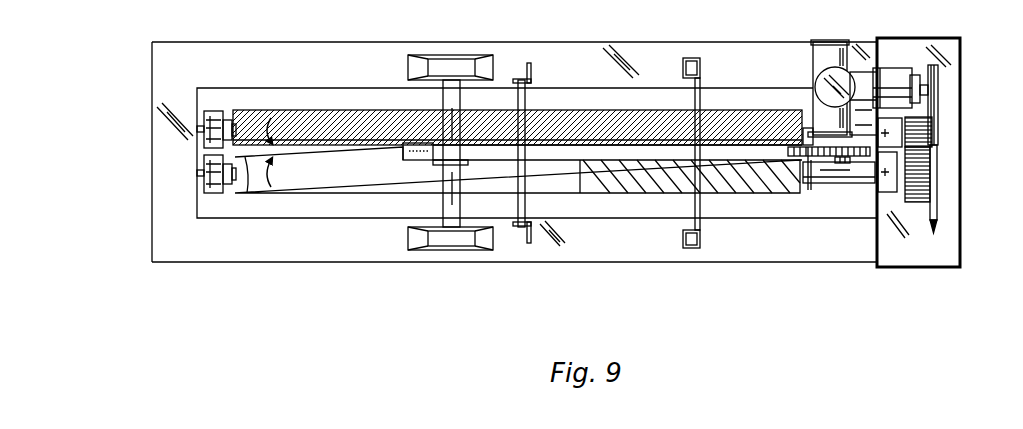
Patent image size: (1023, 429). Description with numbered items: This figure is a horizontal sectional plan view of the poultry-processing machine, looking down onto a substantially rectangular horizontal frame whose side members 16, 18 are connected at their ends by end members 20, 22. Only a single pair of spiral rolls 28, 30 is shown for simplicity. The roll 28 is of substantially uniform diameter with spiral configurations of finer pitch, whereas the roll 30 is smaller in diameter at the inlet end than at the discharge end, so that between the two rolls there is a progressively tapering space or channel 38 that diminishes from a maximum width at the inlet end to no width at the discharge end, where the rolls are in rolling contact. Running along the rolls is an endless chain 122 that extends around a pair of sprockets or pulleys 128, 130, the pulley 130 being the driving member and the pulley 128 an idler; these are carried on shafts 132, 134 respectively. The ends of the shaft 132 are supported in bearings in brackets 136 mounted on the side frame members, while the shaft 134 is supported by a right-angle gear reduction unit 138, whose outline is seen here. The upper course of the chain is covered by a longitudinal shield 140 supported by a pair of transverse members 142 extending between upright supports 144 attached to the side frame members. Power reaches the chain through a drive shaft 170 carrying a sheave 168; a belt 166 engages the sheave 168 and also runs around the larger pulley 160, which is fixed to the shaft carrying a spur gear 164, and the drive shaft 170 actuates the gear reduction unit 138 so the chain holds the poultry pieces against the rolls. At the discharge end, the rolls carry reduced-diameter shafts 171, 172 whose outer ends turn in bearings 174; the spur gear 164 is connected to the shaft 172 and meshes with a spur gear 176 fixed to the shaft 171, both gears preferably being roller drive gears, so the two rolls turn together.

The side member 16 is at (324, 42).
The side member 18 is at (356, 262).
The end member 20 is at (152, 185).
The end member 22 is at (913, 268).
The roll 28 is at (358, 110).
The roll 30 is at (360, 196).
The tapering space or channel 38 is at (243, 190).
The endless chain 122 is at (808, 190).
The sprocket or pulley 128 is at (440, 165).
The sprocket or pulley 130 is at (835, 180).
The shaft 132 is at (443, 98).
The shaft 134 is at (800, 162).
The brackets 136 is at (458, 55).
The right-angle gear reduction unit 138 is at (840, 40).
The shield 140 is at (560, 158).
The transverse members 142 is at (526, 208).
The upright supports 144 is at (532, 70).
The pulley 160 is at (940, 212).
The spur gear 164 is at (918, 200).
The belt 166 is at (925, 235).
The sheave 168 is at (940, 74).
The drive shaft 170 is at (886, 75).
The shaft 171 is at (812, 118).
The shaft 172 is at (845, 183).
The bearings 174 is at (935, 130).
The spur gear 176 is at (935, 150).